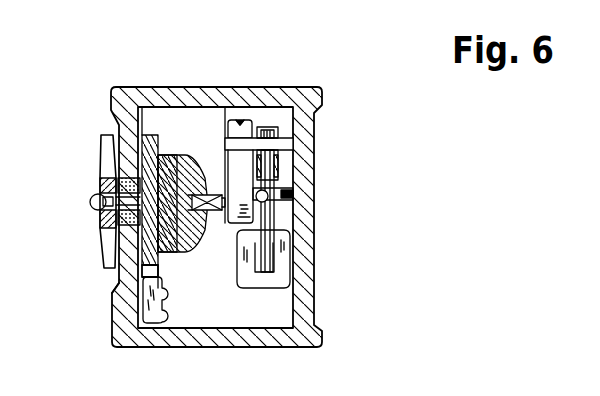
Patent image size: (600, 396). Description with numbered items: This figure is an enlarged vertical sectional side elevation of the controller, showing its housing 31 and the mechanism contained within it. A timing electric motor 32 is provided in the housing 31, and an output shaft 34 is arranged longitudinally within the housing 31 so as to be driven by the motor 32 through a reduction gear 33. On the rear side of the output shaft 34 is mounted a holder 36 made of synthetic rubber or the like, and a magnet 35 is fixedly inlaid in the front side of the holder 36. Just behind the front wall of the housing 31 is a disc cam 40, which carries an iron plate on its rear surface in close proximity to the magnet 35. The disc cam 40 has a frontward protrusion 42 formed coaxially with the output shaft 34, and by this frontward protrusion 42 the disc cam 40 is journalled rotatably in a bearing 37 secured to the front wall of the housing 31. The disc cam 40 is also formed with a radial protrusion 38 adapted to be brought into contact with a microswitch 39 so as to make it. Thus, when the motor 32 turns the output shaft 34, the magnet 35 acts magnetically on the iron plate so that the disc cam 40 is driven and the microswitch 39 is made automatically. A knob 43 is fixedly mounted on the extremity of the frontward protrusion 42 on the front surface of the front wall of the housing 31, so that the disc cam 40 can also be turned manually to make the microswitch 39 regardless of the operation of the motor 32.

The housing 31 is at (290, 96).
The timing electric motor 32 is at (263, 172).
The reduction gear 33 is at (243, 120).
The output shaft 34 is at (208, 197).
The magnet 35 is at (162, 135).
The holder 36 is at (181, 250).
The bearing 37 is at (119, 178).
The radial protrusion 38 is at (158, 278).
The microswitch 39 is at (153, 324).
The disc cam 40 is at (117, 288).
The frontward protrusion 42 is at (92, 203).
The knob 43 is at (107, 262).